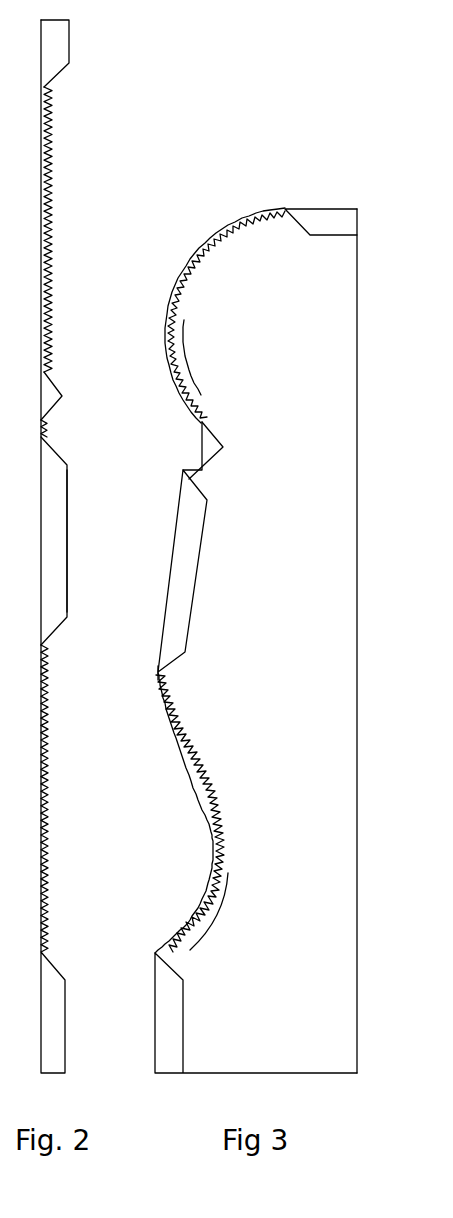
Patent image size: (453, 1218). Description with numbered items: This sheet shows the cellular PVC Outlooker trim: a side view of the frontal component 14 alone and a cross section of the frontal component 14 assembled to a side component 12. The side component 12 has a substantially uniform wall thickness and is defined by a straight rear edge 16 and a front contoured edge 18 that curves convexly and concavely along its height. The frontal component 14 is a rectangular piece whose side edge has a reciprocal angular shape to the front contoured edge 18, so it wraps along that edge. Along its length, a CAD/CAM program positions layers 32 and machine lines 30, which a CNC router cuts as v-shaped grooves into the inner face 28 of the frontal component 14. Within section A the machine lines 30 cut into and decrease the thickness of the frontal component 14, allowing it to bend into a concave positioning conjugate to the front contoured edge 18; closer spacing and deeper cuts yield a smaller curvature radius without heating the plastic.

In FIG. 3, the right side component 12 is at (330, 632).
In FIG. 2, the frontal component 14 is at (69, 43).
In FIG. 3, the frontal component 14 is at (205, 892).
In FIG. 3, the rear edge 16 is at (357, 877).
In FIG. 3, the front contoured edge 18 is at (160, 672).
In FIG. 2, the inner face 28 is at (67, 492).
In FIG. 2, the machine lines 30 is at (48, 182).
In FIG. 3, the machine lines 30 is at (175, 303).
In FIG. 2, the layers 32 is at (58, 577).
In FIG. 3, the layers 32 is at (188, 568).
In FIG. 3, the section A is at (217, 913).